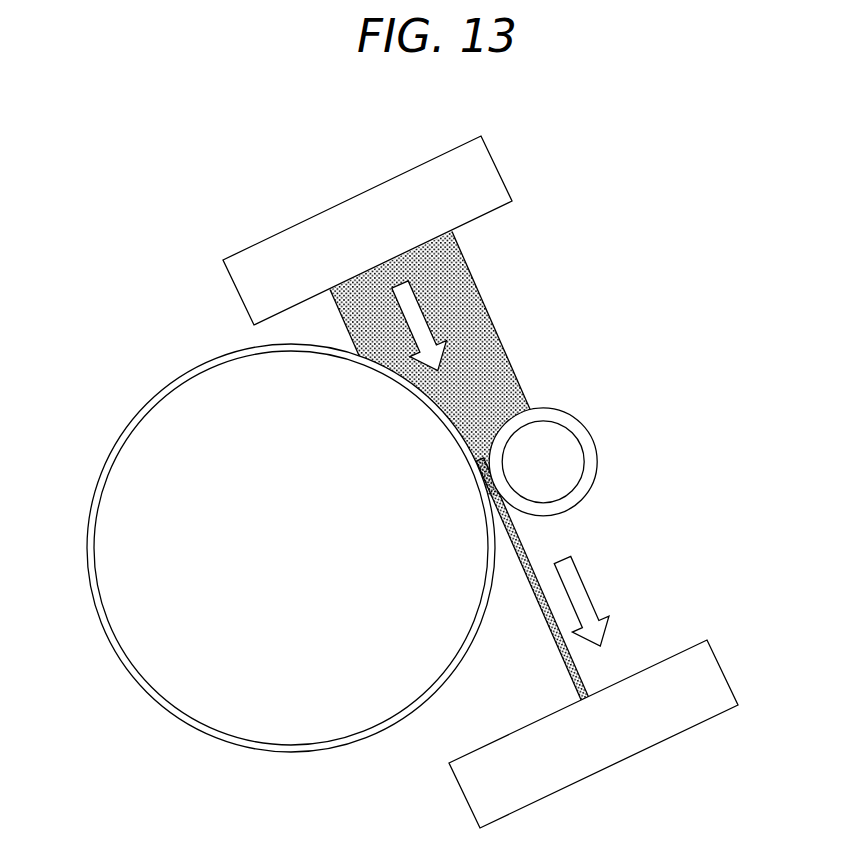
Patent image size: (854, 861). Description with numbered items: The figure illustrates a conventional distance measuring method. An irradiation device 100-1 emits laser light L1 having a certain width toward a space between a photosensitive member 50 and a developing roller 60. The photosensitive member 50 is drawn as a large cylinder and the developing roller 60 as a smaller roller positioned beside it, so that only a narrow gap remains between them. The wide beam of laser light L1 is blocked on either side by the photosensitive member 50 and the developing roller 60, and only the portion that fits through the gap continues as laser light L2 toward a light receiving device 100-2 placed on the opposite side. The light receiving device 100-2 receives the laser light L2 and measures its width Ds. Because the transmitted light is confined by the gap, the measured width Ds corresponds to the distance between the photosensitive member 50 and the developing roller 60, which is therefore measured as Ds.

The photosensitive member 50 is at (110, 494).
The developing roller 60 is at (561, 428).
The irradiation device 100-1 is at (490, 151).
The light receiving device 100-2 is at (717, 654).
The laser light L1 is at (420, 307).
The laser light L2 is at (587, 582).
The width of the light Ds is at (526, 472).